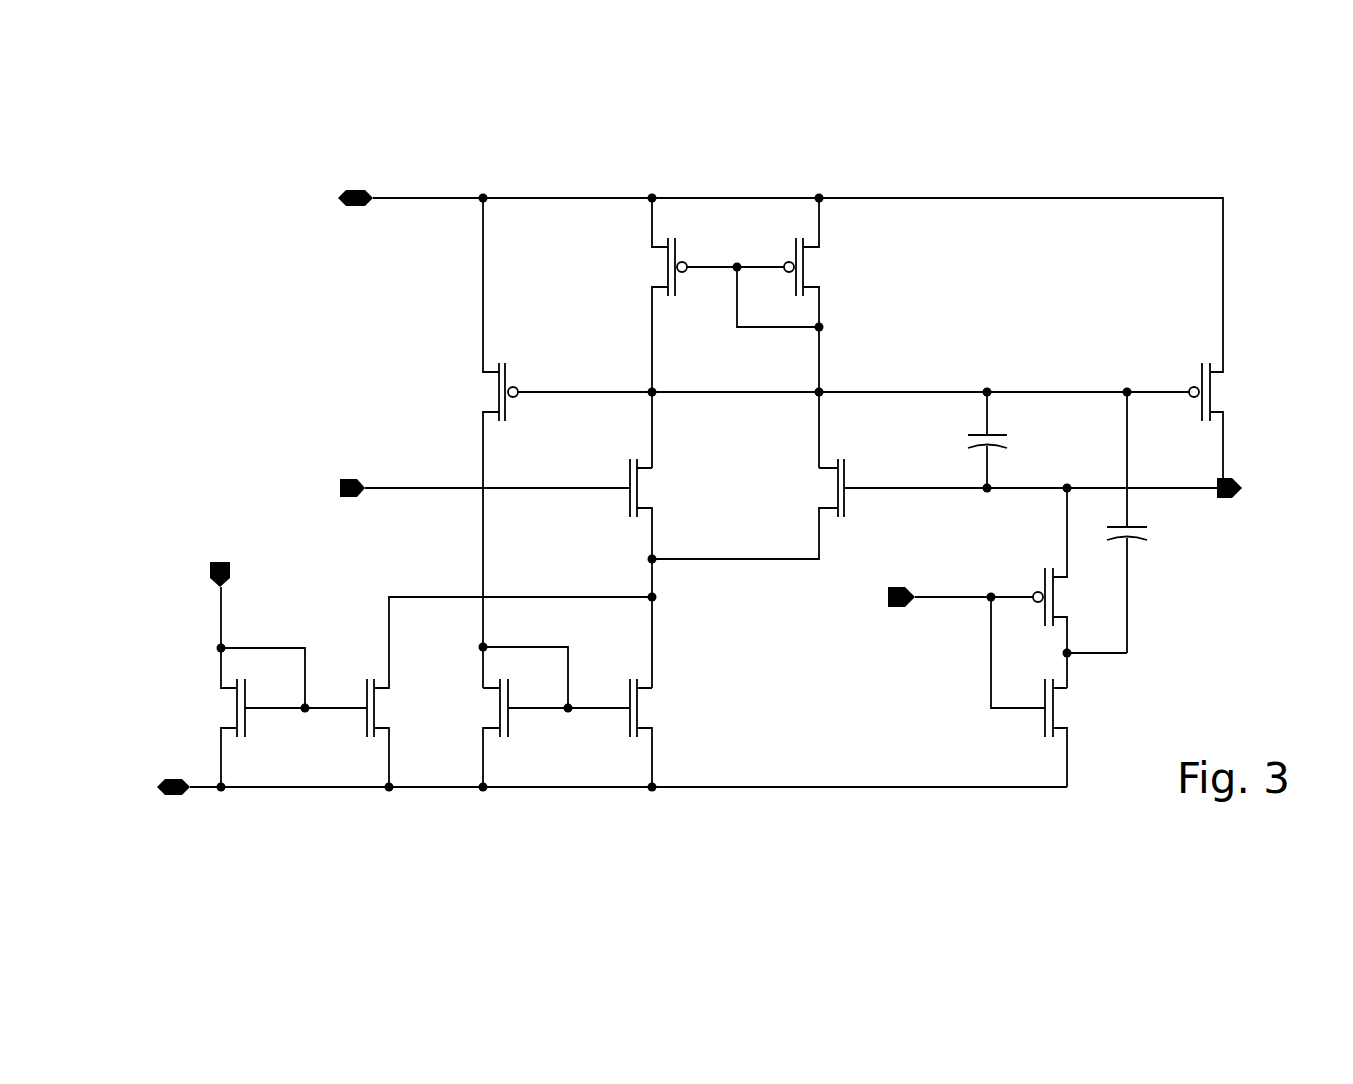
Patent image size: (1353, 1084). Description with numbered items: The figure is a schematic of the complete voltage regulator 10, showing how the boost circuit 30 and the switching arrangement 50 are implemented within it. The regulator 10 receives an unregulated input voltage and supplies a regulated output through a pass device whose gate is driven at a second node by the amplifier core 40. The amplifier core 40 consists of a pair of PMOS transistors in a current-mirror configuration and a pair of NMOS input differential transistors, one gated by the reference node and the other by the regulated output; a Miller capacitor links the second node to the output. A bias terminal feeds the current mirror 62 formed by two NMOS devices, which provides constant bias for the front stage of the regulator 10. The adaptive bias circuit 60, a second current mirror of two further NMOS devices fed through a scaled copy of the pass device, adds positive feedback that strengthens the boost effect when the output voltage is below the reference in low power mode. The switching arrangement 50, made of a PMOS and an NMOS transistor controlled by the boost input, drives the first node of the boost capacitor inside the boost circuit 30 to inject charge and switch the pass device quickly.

The voltage regulator 10 is at (528, 147).
The amplifier core 40 is at (721, 150).
The boost circuit 30 is at (1179, 615).
The switching arrangement 50 is at (946, 682).
The adaptive bias circuit 60 is at (569, 827).
The current mirror 62 is at (304, 827).